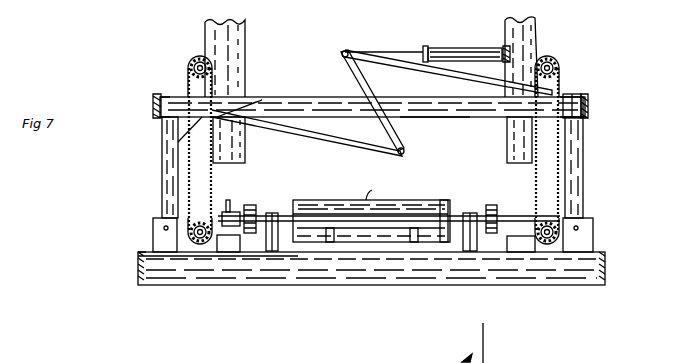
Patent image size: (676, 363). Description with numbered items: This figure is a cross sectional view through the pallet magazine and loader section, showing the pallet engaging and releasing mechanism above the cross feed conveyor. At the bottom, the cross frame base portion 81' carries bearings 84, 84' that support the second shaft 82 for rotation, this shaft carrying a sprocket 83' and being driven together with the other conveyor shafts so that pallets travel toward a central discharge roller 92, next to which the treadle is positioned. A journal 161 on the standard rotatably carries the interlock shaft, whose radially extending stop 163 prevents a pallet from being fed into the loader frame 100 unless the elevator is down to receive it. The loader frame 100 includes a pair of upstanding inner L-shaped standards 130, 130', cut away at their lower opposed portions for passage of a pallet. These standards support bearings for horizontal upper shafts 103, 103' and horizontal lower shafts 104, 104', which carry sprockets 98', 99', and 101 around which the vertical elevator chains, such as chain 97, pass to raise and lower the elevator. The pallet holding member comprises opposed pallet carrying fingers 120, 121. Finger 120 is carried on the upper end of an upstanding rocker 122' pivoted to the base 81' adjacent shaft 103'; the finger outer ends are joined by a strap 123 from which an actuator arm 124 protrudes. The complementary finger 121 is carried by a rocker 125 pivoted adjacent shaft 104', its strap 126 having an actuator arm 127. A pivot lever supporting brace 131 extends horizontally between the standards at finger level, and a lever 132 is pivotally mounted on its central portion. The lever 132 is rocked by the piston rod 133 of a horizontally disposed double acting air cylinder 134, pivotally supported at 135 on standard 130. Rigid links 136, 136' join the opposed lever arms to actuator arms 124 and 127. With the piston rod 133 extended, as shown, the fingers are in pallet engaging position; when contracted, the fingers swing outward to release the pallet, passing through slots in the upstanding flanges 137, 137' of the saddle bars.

The cross frame base portion 81' is at (371, 279).
The loader frame 100 is at (245, 50).
The inner vertical standard 130' is at (244, 15).
The continuous chain 97 is at (229, 140).
The inner vertical standard 130 is at (506, 51).
The pivotal support 135 is at (522, 40).
The rocker 122' is at (564, 184).
The pallet carrying finger 121 is at (260, 102).
The pallet carrying finger 120 is at (476, 102).
The pivot lever supporting brace 131 is at (446, 116).
The strap 126 is at (153, 95).
The actuator arm 127 is at (153, 107).
The rocker 125 is at (162, 142).
The horizontal lower shaft 104 is at (188, 70).
The sprocket 101 is at (188, 70).
The horizontal lower shaft 104' is at (185, 244).
The upstanding flange 137' is at (218, 150).
The horizontal upper shaft 103 is at (558, 67).
The sprocket 98' is at (566, 64).
The horizontal upper shaft 103' is at (561, 244).
The upstanding flange 137 is at (524, 150).
The sprocket 99' is at (525, 253).
The strap 123 is at (576, 94).
The actuator arm 124 is at (589, 102).
The lever 132 is at (346, 70).
The rigid link 136 is at (448, 72).
The rigid link 136' is at (307, 133).
The piston rod 133 is at (377, 54).
The double acting air cylinder 134 is at (466, 46).
The sprocket 83' is at (389, 201).
The journal 161 is at (232, 258).
The stop 163 is at (246, 202).
The bearing 84' is at (288, 242).
The second shaft 82 is at (316, 202).
The central discharge roller 92 is at (450, 202).
The bearing 84 is at (481, 238).